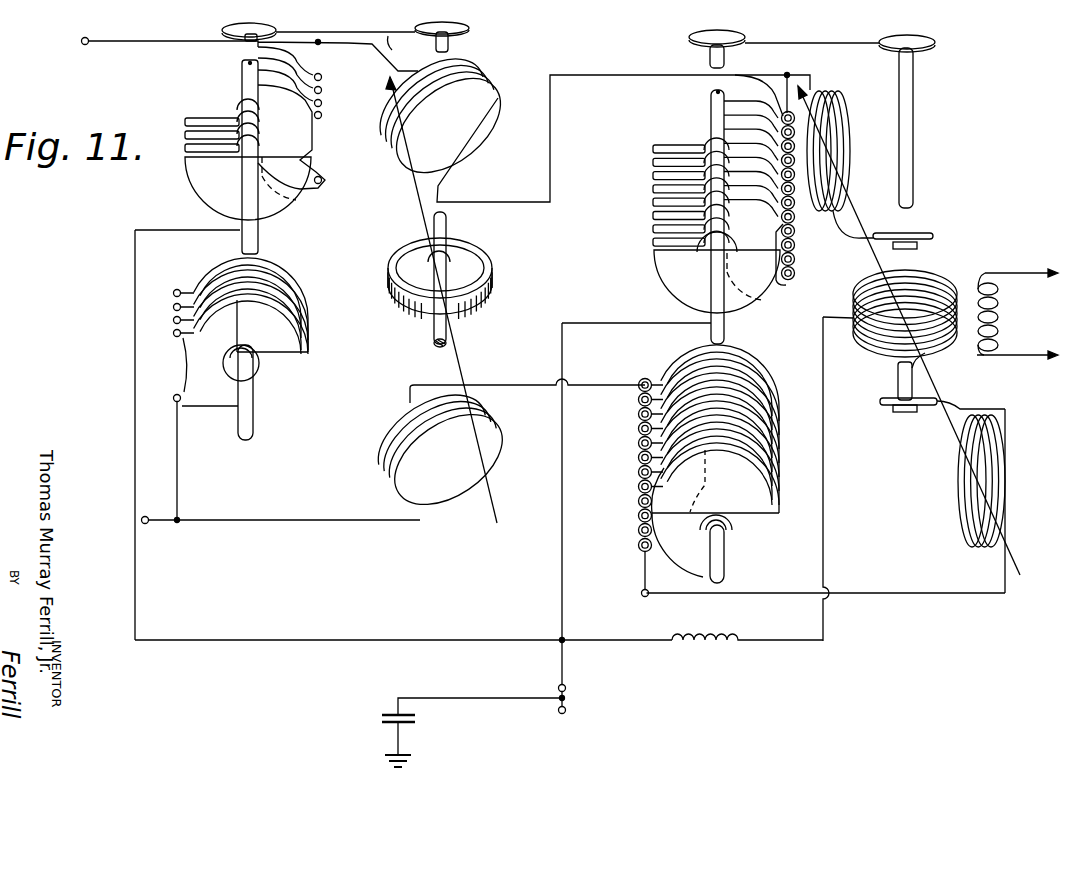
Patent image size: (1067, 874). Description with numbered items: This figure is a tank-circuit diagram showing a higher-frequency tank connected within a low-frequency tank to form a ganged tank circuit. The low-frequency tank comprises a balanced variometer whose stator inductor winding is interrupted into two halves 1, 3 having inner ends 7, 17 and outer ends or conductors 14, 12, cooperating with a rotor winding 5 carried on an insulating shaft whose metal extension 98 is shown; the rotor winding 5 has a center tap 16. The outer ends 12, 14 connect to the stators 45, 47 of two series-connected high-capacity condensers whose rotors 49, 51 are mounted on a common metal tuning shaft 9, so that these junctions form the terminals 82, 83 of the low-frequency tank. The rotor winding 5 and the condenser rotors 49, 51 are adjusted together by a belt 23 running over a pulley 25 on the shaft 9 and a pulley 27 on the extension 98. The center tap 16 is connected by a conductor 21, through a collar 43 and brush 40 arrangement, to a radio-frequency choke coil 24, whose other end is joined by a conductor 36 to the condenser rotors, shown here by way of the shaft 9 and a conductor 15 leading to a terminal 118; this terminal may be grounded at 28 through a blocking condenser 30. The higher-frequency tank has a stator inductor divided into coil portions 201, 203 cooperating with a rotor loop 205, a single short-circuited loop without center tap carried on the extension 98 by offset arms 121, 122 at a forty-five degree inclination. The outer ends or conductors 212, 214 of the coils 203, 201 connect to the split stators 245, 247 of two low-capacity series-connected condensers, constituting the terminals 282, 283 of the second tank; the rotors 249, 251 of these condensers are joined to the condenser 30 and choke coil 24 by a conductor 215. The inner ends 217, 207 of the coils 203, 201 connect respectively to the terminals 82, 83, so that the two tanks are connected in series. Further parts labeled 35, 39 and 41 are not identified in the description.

The stator inductor-winding portion 1 is at (995, 453).
The stator inductor-winding portion 3 is at (850, 148).
The rotor winding 5 is at (854, 289).
The inner end 7 is at (935, 412).
The rotor metal tuning shaft 9 is at (258, 409).
The outer end conductor 12 is at (812, 83).
The outer end conductor 14 is at (858, 590).
The conductor 15 is at (564, 497).
The center tap 16 is at (853, 330).
The inner end 17 is at (851, 243).
The conductor 21 is at (826, 481).
The belt 23 is at (846, 35).
The radio-frequency choke coil 24 is at (712, 654).
The pulley 25 is at (222, 30).
The pulley 27 is at (469, 29).
The ground 28 is at (405, 762).
The blocking condenser 30 is at (372, 722).
The output coil 35 is at (998, 319).
The conductor 36 is at (605, 645).
The contact 39 is at (933, 237).
The brush 40 is at (938, 398).
The contact nut 41 is at (920, 246).
The collar 43 is at (897, 413).
The stator plate section 45 is at (744, 96).
The stator plate section 47 is at (672, 548).
The rotor plate section 49 is at (655, 175).
The rotor plate section 51 is at (745, 368).
The tank-circuit terminal 82 is at (788, 75).
The tank-circuit terminal 83 is at (642, 597).
The shaft extension 98 is at (450, 50).
The terminal 118 is at (559, 637).
The offset arm 121 is at (430, 262).
The offset arm 122 is at (422, 300).
The inductor-winding portion 201 is at (498, 428).
The inductor-winding portion 203 is at (496, 80).
The rotor-winding loop 205 is at (406, 304).
The inner end conductor 207 is at (477, 384).
The outer end conductor 212 is at (346, 52).
The outer end conductor 214 is at (273, 519).
The conductor 215 is at (133, 361).
The inner end conductor 217 is at (472, 202).
The split stator 245 is at (296, 128).
The split stator 247 is at (215, 410).
The rotor 249 is at (200, 178).
The rotor 251 is at (283, 278).
The tank-circuit terminal 282 is at (350, 50).
The tank-circuit terminal 283 is at (179, 523).